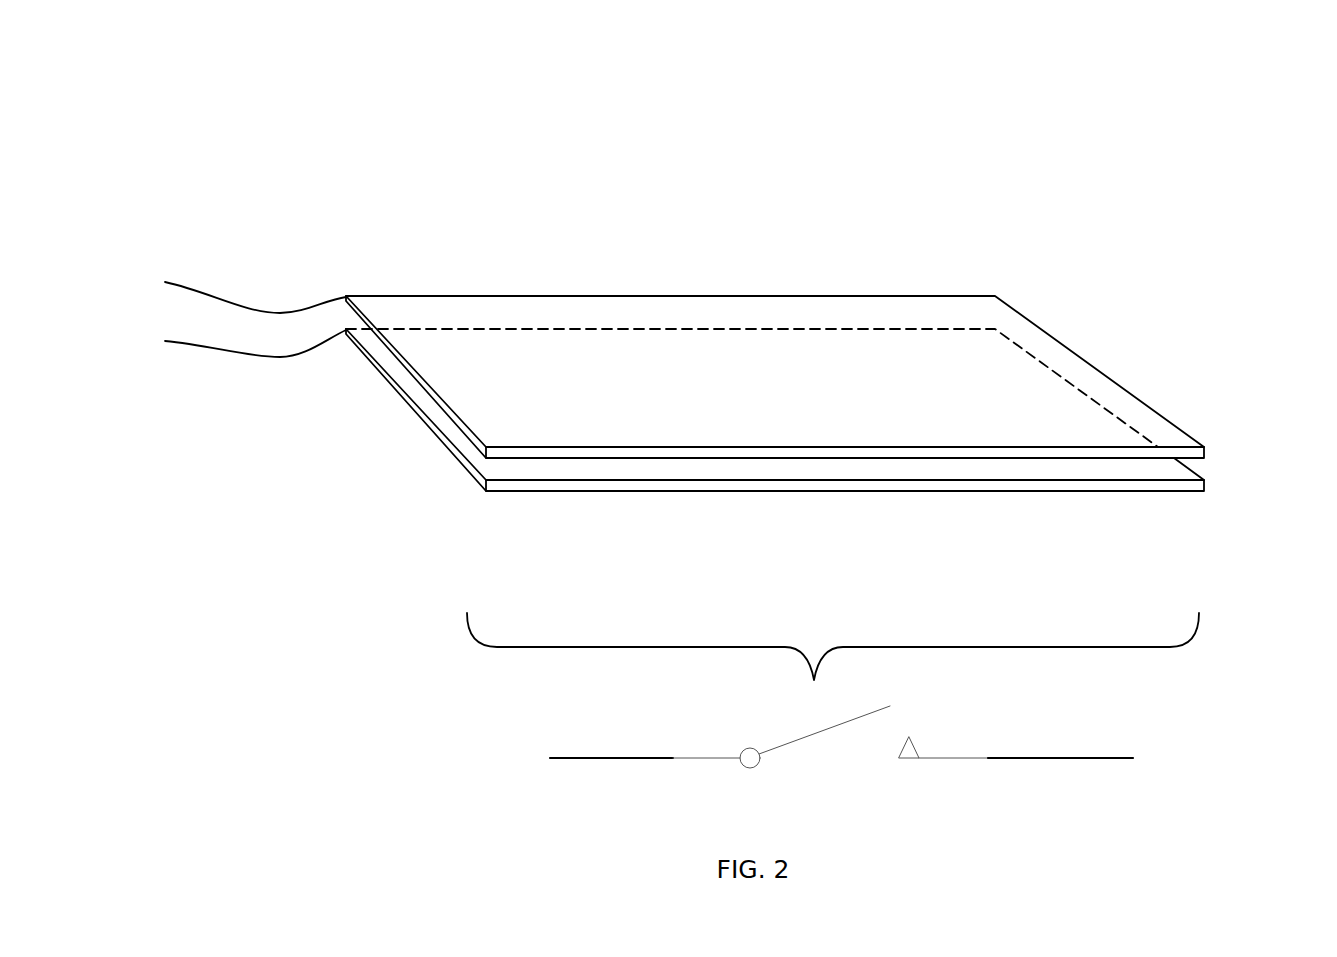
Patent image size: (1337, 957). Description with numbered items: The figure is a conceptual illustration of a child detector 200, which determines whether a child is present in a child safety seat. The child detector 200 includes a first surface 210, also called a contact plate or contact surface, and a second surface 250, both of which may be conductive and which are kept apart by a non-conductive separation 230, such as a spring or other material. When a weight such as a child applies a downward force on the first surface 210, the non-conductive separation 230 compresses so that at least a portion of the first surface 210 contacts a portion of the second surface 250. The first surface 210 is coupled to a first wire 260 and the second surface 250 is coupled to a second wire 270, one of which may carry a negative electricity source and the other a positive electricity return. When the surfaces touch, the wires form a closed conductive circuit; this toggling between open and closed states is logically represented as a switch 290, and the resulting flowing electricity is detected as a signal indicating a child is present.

The child detector 200 is at (231, 63).
The first surface 210 is at (711, 295).
The non-conductive separation 230 is at (1205, 469).
The second surface 250 is at (781, 328).
The first wire 260 is at (212, 296).
The second wire 270 is at (232, 360).
The switch 290 is at (684, 757).